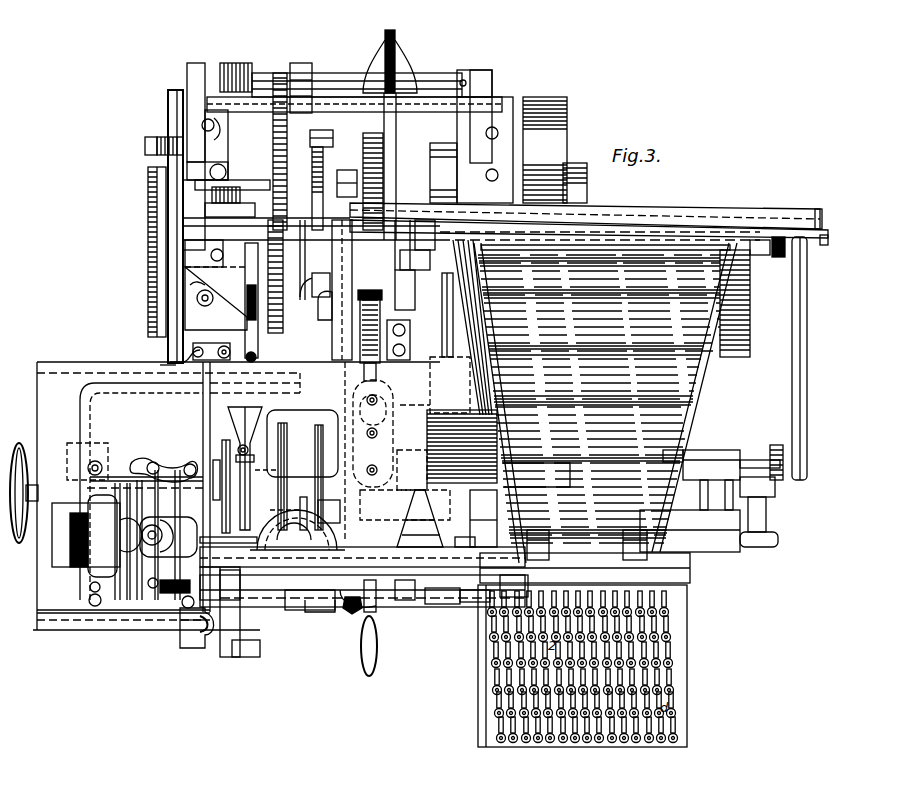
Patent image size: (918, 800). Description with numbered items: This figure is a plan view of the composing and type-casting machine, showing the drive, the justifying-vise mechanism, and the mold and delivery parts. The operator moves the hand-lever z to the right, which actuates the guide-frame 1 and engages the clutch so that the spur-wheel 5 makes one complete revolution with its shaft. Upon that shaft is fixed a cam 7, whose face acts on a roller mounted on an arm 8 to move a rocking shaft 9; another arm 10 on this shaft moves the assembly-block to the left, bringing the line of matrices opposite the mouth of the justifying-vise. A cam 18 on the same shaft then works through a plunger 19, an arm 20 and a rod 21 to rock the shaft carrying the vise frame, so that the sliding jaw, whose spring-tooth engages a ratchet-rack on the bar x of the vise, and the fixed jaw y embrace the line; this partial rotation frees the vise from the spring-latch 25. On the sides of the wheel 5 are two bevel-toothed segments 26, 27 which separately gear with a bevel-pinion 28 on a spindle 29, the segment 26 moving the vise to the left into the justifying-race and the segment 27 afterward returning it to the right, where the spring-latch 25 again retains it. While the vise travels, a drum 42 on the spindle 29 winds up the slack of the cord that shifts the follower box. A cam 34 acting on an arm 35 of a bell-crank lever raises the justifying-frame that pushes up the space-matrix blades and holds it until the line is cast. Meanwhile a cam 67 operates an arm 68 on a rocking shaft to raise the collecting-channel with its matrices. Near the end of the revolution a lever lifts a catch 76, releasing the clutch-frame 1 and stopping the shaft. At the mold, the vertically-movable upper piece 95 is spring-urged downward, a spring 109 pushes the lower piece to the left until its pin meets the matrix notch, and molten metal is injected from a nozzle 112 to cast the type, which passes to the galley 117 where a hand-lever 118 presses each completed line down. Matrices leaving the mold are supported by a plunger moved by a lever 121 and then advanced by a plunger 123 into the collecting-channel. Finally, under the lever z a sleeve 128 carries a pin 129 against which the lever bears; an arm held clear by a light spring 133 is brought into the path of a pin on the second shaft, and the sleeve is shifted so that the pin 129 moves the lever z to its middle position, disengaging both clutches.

The guide-frame 1 is at (325, 305).
The spur-wheel 5 is at (326, 150).
The cam 7 is at (443, 173).
The arm 8 is at (418, 285).
The rocking shaft 9 is at (420, 530).
The arm 10 is at (474, 518).
The cam 18 is at (284, 276).
The plunger 19 is at (258, 302).
The arm 20 is at (211, 346).
The rod 21 is at (190, 360).
The spring-latch 25 is at (589, 226).
The bevel-toothed segment 26 is at (346, 176).
The bevel-toothed segment 27 is at (586, 216).
The bevel-pinion 28 is at (335, 305).
The spindle 29 is at (378, 366).
The cam 34 is at (312, 290).
The arm 35 is at (325, 130).
The drum 42 is at (305, 513).
The cam 67 is at (156, 258).
The arm 68 is at (170, 137).
The catch 76 is at (385, 292).
The upper mold piece 95 is at (300, 540).
The spring 109 is at (250, 447).
The nozzle 112 is at (220, 583).
The galley 117 is at (245, 648).
The hand-lever 118 is at (240, 620).
The lever 121 is at (270, 470).
The plunger 123 is at (198, 462).
The sleeve 128 is at (320, 604).
The pin 129 is at (376, 608).
The spring 133 is at (353, 614).
The bar of the vise x is at (457, 600).
The fixed jaw y is at (500, 612).
The hand-lever z is at (374, 646).